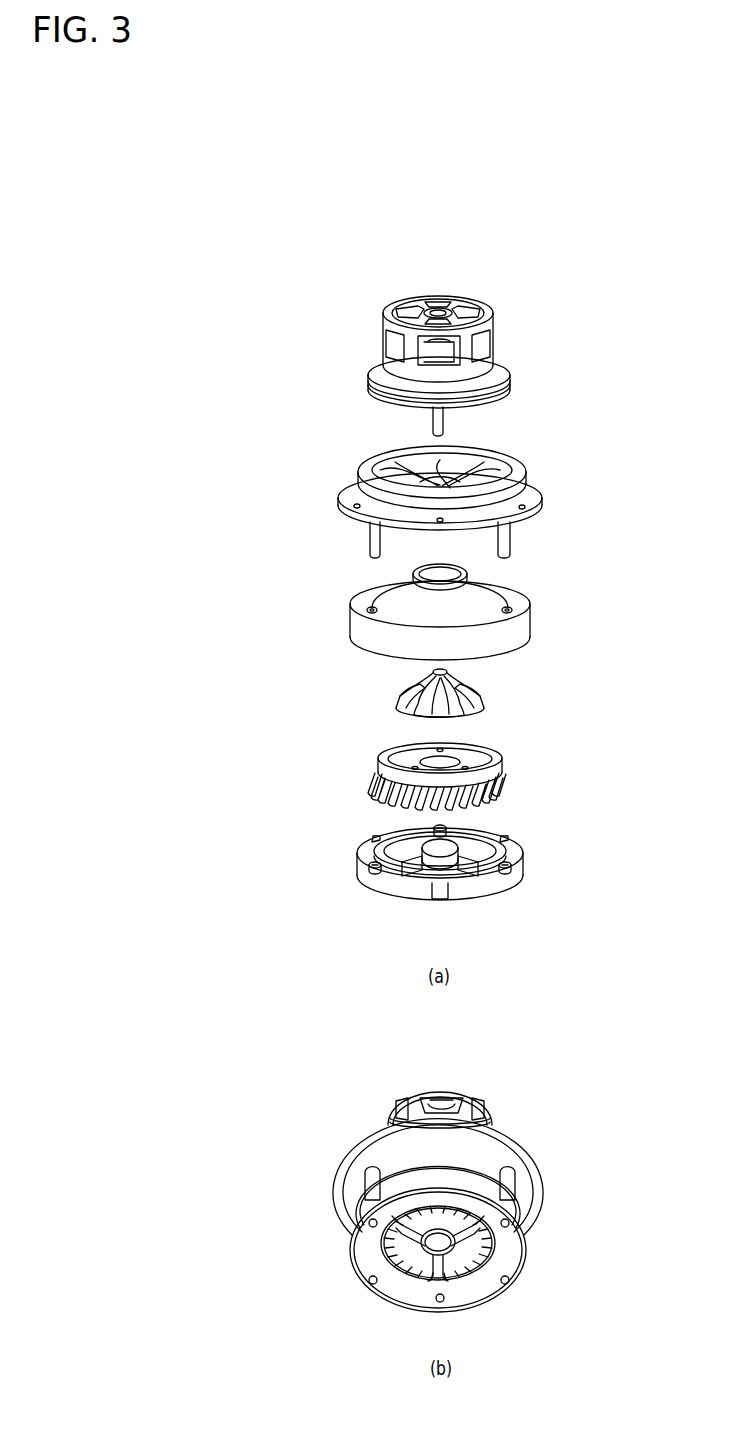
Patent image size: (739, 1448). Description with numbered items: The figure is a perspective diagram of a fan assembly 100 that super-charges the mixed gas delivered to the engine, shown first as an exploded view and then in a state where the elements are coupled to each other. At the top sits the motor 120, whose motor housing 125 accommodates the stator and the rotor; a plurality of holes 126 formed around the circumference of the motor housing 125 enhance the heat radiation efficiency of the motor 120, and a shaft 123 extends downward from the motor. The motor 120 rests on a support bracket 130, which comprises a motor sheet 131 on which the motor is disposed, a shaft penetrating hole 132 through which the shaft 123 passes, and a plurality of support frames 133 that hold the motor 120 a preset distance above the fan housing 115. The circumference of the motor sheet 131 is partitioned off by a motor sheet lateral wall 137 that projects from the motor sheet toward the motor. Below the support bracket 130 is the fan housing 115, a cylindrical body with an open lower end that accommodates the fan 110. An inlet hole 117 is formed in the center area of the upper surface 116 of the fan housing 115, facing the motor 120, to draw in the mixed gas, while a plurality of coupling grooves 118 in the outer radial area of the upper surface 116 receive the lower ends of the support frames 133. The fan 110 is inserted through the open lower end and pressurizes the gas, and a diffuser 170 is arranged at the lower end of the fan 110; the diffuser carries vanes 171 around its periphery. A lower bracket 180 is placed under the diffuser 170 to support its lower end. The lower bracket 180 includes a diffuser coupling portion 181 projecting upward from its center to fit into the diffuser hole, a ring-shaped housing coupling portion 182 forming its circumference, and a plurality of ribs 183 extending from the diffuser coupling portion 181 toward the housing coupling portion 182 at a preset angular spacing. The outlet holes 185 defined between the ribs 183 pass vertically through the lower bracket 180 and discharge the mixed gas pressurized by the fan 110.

The fan assembly 100 is at (284, 237).
The fan 110 is at (480, 700).
The fan housing 115 is at (532, 624).
The upper surface 116 is at (503, 600).
The inlet hole 117 is at (420, 577).
The coupling groove 118 is at (370, 611).
The motor 120 is at (525, 366).
The shaft 123 is at (437, 426).
The motor housing 125 is at (497, 362).
The holes 126 is at (388, 343).
The support bracket 130 is at (553, 485).
The motor sheet 131 is at (480, 478).
The shaft penetrating hole 132 is at (395, 467).
The support frames 133 is at (368, 548).
The motor sheet lateral wall 137 is at (373, 491).
The diffuser 170 is at (500, 762).
The diffuser vane 171 is at (395, 765).
The lower bracket 180 is at (531, 855).
The diffuser coupling portion 181 is at (437, 851).
The housing coupling portion 182 is at (382, 885).
The ribs 183 is at (415, 870).
The outlet hole 185 is at (463, 865).